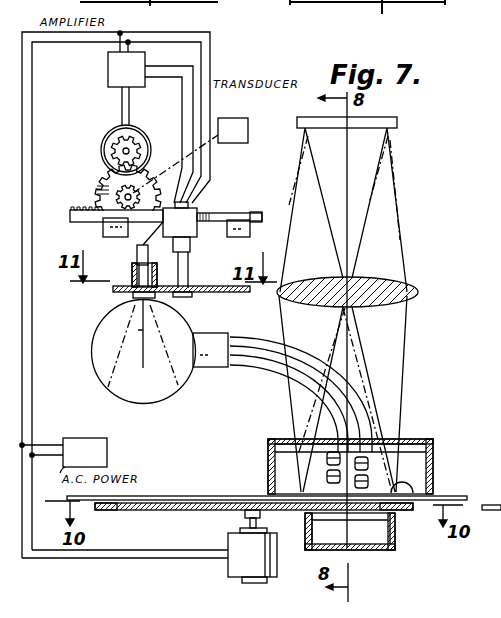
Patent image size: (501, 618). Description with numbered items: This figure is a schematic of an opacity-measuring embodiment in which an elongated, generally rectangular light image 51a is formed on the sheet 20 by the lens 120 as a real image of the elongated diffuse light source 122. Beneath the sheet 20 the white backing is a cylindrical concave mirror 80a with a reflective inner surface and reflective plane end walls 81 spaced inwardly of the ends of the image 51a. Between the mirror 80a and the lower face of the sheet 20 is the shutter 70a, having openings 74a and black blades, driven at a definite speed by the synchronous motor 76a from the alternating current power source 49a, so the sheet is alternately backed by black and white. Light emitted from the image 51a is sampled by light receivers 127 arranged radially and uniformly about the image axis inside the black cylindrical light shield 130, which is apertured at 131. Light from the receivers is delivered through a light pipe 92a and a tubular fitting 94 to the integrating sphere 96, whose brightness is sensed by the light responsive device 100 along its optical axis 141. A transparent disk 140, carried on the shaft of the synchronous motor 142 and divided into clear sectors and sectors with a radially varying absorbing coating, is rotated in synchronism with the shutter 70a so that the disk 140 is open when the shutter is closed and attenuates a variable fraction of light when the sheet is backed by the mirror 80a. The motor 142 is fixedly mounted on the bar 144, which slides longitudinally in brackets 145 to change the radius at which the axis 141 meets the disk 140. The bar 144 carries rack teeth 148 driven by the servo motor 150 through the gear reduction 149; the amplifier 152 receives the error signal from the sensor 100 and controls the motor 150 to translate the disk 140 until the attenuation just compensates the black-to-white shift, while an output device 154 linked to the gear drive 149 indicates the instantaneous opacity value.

The sheet 20 is at (442, 500).
The alternating current power source 49a is at (107, 455).
The light image 51a is at (415, 500).
The shutter 70a is at (195, 512).
The openings 74a is at (110, 512).
The synchronous motor 76a is at (230, 565).
The concave mirror 80a is at (375, 556).
The reflective plane end walls 81 is at (393, 545).
The light pipe 92a is at (258, 370).
The cylindrical tubular fitting 94 is at (210, 365).
The integrating sphere 96 is at (137, 392).
The light responsive device 100 is at (137, 256).
The lens 120 is at (394, 283).
The elongated diffuse light source 122 is at (383, 117).
The light receivers 127 is at (287, 452).
The light shield 130 is at (440, 470).
The aperture 131 is at (402, 438).
The transparent disk 140 is at (219, 297).
The optical axis 141 is at (122, 330).
The synchronous motor 142 is at (197, 203).
The bar 144 is at (225, 213).
The brackets 145 is at (103, 231).
The rack teeth 148 is at (93, 195).
The gear reduction 149 is at (100, 173).
The servo motor 150 is at (103, 135).
The amplifier 152 is at (108, 70).
The output device 154 is at (242, 118).